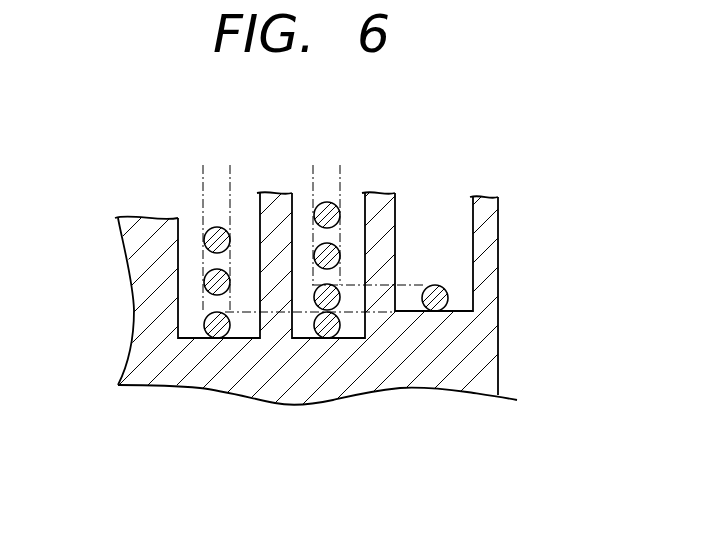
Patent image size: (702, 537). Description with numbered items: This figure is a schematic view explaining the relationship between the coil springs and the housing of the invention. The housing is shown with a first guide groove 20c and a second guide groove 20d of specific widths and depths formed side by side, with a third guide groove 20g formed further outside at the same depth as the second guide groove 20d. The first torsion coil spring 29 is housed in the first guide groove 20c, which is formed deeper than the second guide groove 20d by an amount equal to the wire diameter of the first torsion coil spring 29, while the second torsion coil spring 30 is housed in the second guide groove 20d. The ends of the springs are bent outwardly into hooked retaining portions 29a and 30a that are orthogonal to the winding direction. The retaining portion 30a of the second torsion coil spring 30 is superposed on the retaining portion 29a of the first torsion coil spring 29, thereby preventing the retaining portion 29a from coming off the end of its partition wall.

The first guide groove 20c is at (187, 292).
The second guide groove 20d is at (305, 220).
The third guide groove 20g is at (437, 225).
The first torsion coil spring 29 is at (203, 240).
The retaining portion 29a is at (318, 338).
The second torsion coil spring 30 is at (333, 201).
The retaining portion 30a is at (428, 313).